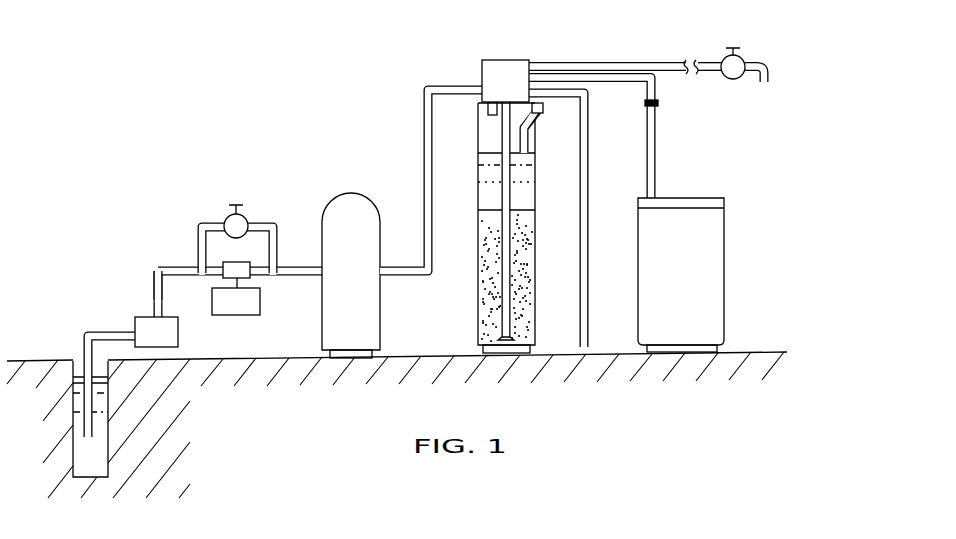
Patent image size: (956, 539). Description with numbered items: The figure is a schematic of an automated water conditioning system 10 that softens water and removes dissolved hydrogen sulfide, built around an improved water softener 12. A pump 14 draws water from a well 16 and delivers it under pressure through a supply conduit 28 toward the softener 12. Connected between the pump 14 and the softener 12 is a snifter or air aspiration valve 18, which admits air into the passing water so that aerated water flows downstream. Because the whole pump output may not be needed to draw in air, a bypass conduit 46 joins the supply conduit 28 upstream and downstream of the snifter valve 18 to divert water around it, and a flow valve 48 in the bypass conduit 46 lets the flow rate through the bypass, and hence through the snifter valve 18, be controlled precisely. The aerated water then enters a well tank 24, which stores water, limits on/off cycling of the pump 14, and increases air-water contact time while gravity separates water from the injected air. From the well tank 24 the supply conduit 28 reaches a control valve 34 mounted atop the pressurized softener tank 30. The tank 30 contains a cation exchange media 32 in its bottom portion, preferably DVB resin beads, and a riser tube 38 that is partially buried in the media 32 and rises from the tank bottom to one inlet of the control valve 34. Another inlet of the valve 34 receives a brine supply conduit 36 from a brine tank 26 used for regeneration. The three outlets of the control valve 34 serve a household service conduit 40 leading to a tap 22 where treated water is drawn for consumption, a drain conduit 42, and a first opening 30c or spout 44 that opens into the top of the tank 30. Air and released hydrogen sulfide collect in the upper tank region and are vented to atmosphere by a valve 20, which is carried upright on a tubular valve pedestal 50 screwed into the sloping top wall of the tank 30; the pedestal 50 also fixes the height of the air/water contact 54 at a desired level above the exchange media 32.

The automated water conditioning system 10 is at (90, 227).
The water softener 12 is at (612, 179).
The pump 14 is at (139, 315).
The well 16 is at (96, 451).
The snifter or air aspiration valve 18 is at (259, 279).
The valve 20 is at (549, 111).
The tap 22 is at (750, 55).
The well tank 24 is at (334, 193).
The brine tank 26 is at (713, 196).
The supply conduit 28 is at (430, 281).
The softener tank 30 is at (469, 226).
The first opening 30c is at (487, 105).
The cation exchange media 32 is at (529, 269).
The control valve 34 is at (506, 58).
The brine supply conduit 36 is at (656, 126).
The riser tube 38 is at (510, 313).
The household service conduit 40 is at (652, 62).
The drain conduit 42 is at (589, 150).
The spout 44 is at (489, 109).
The bypass conduit 46 is at (202, 222).
The flow valve 48 is at (244, 214).
The valve pedestal 50 is at (537, 150).
The air/water contact 54 is at (492, 163).